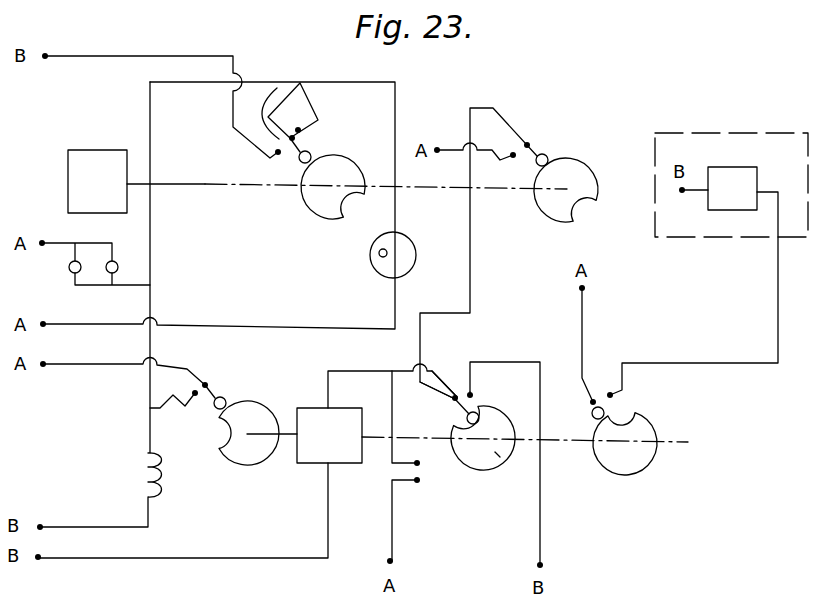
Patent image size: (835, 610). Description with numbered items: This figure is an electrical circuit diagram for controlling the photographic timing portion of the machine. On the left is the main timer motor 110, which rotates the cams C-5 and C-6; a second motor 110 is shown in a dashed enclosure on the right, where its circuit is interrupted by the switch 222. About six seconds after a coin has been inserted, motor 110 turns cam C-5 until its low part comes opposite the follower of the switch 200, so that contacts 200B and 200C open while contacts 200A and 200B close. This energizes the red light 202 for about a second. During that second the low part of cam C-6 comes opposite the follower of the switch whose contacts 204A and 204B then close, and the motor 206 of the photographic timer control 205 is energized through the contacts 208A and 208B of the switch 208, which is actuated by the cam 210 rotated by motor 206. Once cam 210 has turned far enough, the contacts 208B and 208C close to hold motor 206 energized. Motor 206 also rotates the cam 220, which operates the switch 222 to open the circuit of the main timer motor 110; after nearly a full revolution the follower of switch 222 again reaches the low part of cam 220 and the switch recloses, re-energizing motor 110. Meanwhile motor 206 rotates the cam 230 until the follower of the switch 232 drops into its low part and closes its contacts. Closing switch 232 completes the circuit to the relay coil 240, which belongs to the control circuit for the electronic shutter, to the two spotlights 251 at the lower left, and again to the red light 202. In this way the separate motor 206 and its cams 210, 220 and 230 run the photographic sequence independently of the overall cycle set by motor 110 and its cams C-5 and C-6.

The main timer motor 110 is at (103, 150).
The switch 200 is at (277, 87).
The contact 200A is at (288, 165).
The contact 200B is at (301, 138).
The contact 200C is at (298, 124).
The red light 202 is at (405, 249).
The contact 204A is at (514, 162).
The contact 204B is at (530, 137).
The photographic timer control 205 is at (452, 362).
The motor 206 is at (312, 452).
The switch 208 is at (448, 412).
The contact 208A is at (451, 401).
The contact 208B is at (463, 395).
The contact 208C is at (473, 395).
The cam 210 is at (495, 452).
The cam 220 is at (627, 458).
The switch 222 is at (616, 400).
The cam 230 is at (241, 447).
The switch 232 is at (205, 383).
The relay coil 240 is at (137, 468).
The spotlights 251 is at (97, 262).
The cam C-5 is at (316, 194).
The cam C-6 is at (560, 205).